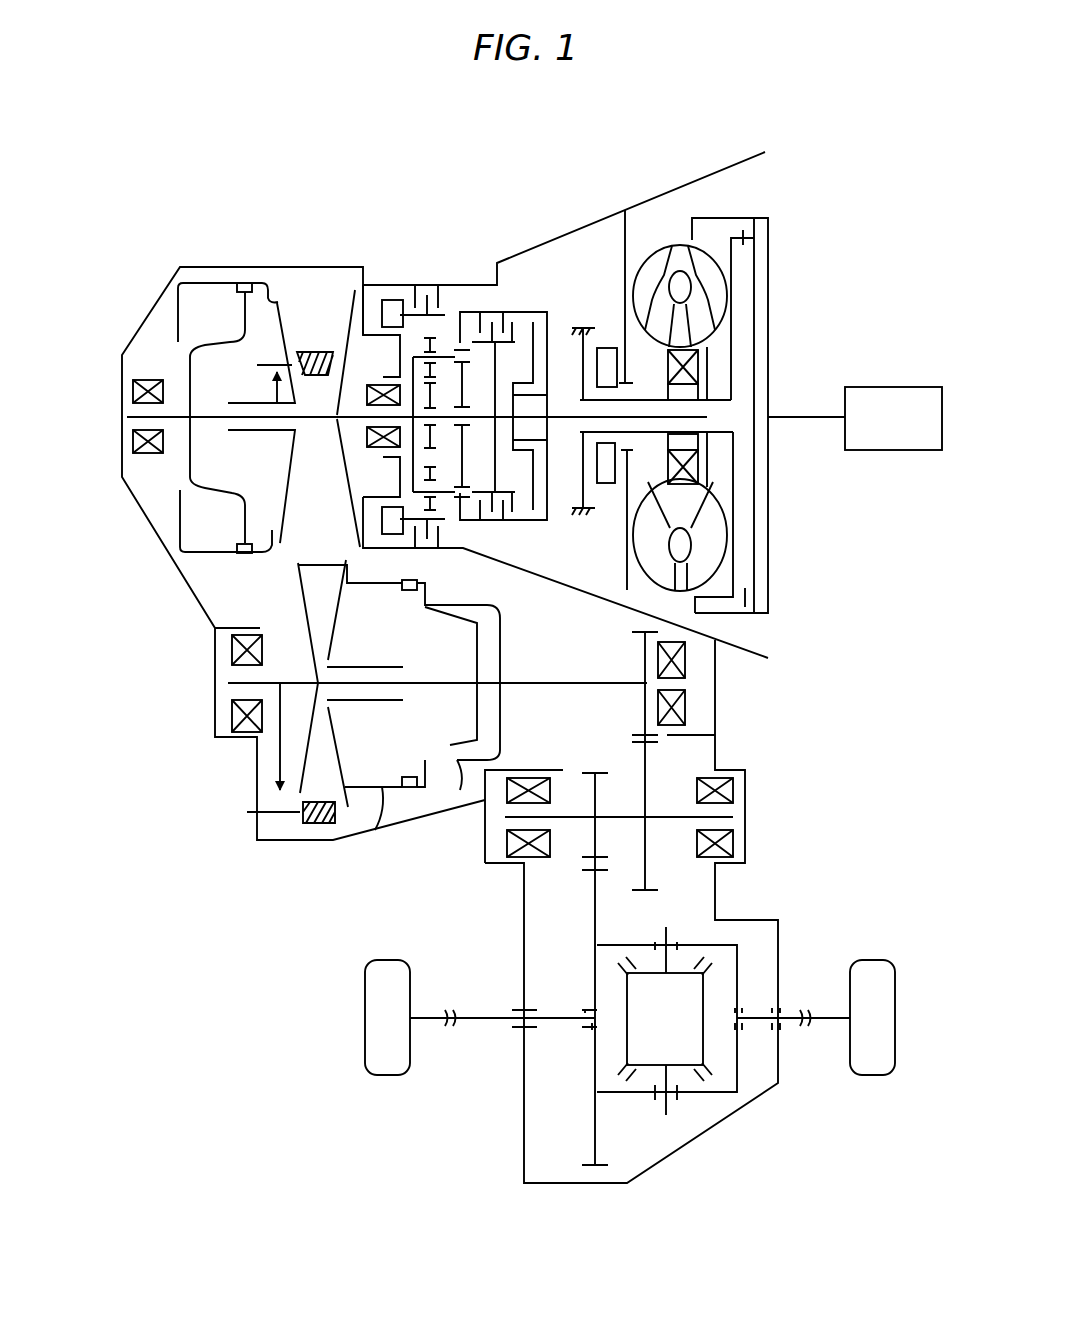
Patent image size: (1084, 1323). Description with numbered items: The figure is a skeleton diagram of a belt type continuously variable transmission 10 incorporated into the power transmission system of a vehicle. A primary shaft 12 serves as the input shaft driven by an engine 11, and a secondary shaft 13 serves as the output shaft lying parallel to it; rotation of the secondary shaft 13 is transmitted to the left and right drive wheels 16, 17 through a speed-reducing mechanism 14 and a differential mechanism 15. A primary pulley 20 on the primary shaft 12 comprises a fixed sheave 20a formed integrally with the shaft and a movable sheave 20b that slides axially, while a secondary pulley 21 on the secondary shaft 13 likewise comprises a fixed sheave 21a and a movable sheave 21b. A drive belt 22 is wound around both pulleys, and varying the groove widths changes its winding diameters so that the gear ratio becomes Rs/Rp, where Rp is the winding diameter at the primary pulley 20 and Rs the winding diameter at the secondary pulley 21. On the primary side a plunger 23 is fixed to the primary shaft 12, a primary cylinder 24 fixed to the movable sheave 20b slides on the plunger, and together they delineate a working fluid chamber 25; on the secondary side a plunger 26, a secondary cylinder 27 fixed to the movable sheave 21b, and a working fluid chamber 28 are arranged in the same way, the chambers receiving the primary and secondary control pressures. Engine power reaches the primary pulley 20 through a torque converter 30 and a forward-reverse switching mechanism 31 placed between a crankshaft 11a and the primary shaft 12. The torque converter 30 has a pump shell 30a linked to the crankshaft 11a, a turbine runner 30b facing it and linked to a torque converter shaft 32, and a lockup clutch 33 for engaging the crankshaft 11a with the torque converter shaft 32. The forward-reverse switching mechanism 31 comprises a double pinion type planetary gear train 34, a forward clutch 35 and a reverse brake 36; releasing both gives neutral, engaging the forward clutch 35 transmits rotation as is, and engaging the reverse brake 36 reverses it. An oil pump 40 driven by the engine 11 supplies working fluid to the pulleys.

The continuously variable transmission 10 is at (220, 160).
The engine 11 is at (925, 400).
The crankshaft 11a is at (812, 420).
The primary shaft 12 is at (133, 412).
The secondary shaft 13 is at (240, 683).
The speed-reducing mechanism 14 is at (680, 758).
The differential mechanism 15 is at (700, 1104).
The left drive wheel 16 is at (390, 1075).
The right drive wheel 17 is at (875, 1075).
The primary pulley 20 is at (294, 355).
The fixed sheave 20a is at (350, 292).
The movable sheave 20b is at (286, 300).
The secondary pulley 21 is at (248, 683).
The fixed sheave 21a is at (298, 593).
The movable sheave 21b is at (298, 566).
The drive belt 22 is at (325, 825).
The plunger 23 is at (217, 345).
The primary cylinder 24 is at (205, 268).
The working fluid chamber 25 is at (190, 470).
The plunger 26 is at (460, 790).
The secondary cylinder 27 is at (378, 830).
The working fluid chamber 28 is at (460, 660).
The torque converter 30 is at (740, 360).
The pump shell 30a is at (655, 255).
The turbine runner 30b is at (718, 297).
The forward-reverse switching mechanism 31 is at (502, 536).
The torque converter shaft 32 is at (563, 420).
The lockup clutch 33 is at (740, 527).
The double pinion type planetary gear train 34 is at (451, 508).
The forward clutch 35 is at (479, 305).
The reverse brake 36 is at (413, 280).
The oil pump 40 is at (605, 487).
The winding diameter of the drive belt relative to the primary pulley Rp is at (272, 397).
The winding diameter of the drive belt relative to the secondary pulley Rs is at (273, 752).